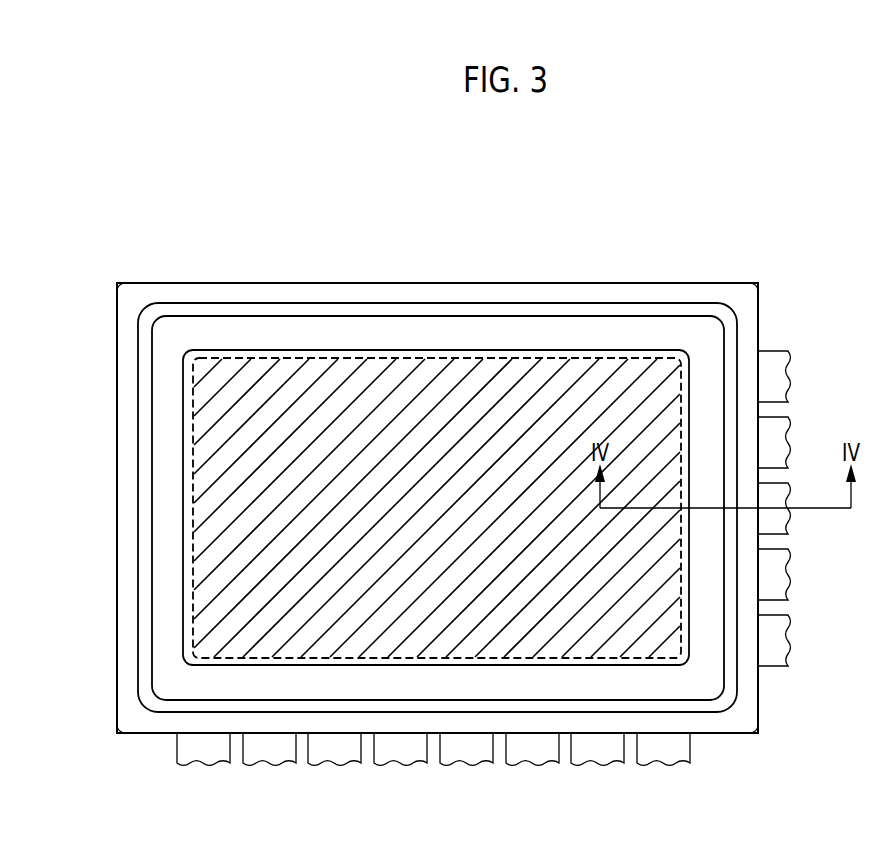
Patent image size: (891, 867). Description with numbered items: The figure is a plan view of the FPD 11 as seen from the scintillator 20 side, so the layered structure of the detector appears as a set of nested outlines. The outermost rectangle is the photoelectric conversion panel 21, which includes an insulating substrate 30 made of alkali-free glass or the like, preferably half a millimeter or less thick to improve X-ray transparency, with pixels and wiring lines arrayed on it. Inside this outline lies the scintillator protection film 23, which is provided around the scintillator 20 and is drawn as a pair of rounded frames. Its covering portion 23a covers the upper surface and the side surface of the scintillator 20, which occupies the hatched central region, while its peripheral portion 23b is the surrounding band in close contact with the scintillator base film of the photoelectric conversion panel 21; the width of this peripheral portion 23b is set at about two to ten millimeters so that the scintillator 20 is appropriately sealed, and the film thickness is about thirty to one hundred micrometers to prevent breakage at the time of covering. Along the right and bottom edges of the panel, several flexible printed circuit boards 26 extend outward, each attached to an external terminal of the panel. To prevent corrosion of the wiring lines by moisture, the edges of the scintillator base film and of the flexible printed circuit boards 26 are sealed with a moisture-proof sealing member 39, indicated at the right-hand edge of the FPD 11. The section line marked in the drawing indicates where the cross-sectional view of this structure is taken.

The FPD 11 is at (790, 274).
The scintillator 20 is at (290, 368).
The photoelectric conversion panel 21 is at (239, 278).
The scintillator protection film 23 is at (475, 314).
The covering portion 23a is at (523, 354).
The peripheral portion 23b is at (650, 330).
The flexible printed circuit board 26 is at (791, 386).
The insulating substrate 30 is at (118, 283).
The sealing member 39 is at (748, 325).